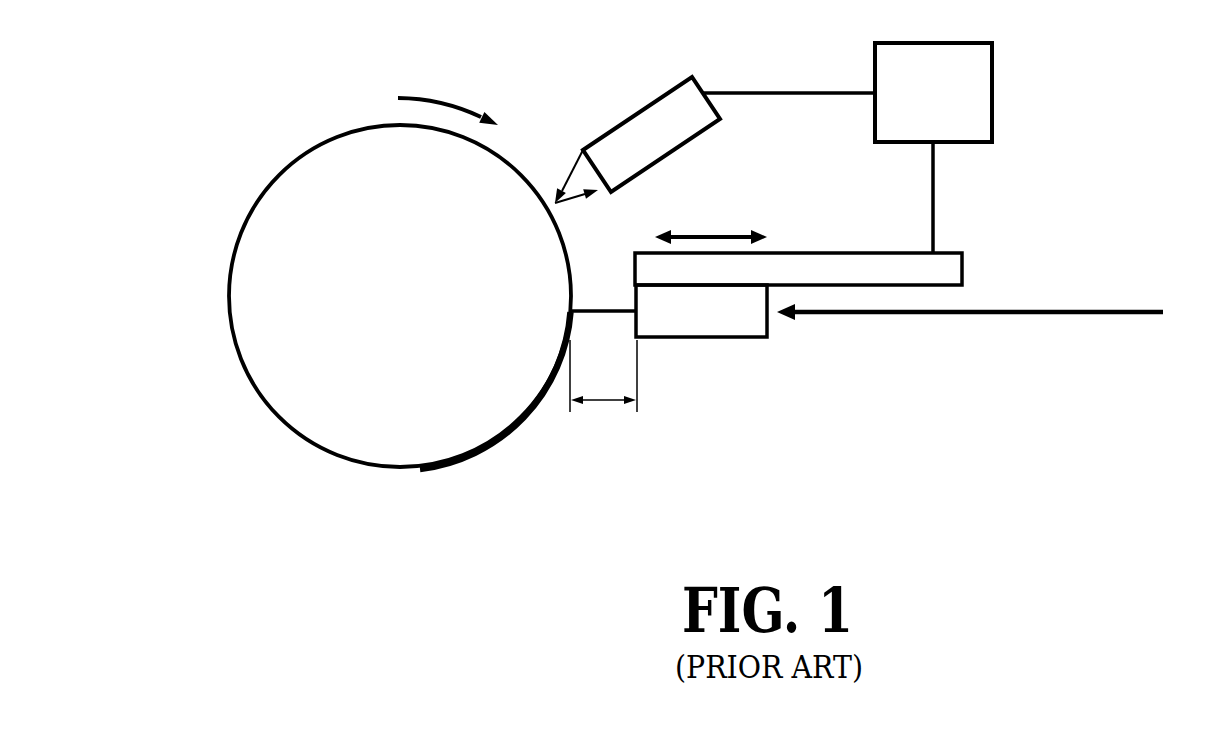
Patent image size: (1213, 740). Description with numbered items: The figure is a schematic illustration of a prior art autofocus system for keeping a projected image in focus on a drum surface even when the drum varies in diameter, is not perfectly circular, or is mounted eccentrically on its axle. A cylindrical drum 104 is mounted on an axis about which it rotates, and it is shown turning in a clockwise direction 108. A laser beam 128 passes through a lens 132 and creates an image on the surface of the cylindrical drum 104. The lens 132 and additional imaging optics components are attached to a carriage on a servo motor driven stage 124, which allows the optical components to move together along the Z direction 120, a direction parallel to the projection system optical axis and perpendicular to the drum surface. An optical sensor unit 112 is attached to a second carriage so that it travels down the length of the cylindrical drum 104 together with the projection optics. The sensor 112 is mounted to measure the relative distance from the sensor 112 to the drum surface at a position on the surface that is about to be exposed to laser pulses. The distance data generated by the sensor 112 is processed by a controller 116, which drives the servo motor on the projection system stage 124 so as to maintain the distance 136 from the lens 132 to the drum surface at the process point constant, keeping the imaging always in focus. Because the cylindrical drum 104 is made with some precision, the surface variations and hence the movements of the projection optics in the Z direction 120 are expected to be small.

The cylindrical drum 104 is at (228, 283).
The clockwise direction 108 is at (450, 102).
The optical sensor unit 112 is at (642, 108).
The controller 116 is at (992, 91).
The Z direction 120 is at (706, 233).
The servo motor driven stage 124 is at (962, 265).
The laser beam 128 is at (1133, 307).
The lens 132 is at (708, 338).
The distance from the lens to the drum surface 136 is at (603, 403).